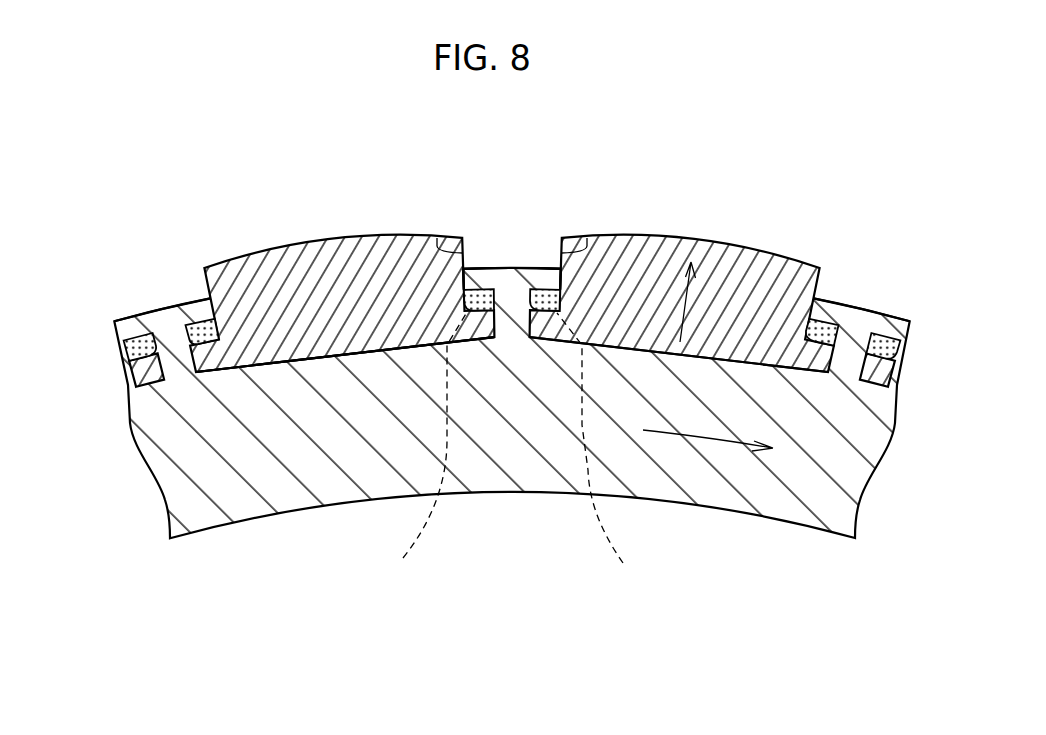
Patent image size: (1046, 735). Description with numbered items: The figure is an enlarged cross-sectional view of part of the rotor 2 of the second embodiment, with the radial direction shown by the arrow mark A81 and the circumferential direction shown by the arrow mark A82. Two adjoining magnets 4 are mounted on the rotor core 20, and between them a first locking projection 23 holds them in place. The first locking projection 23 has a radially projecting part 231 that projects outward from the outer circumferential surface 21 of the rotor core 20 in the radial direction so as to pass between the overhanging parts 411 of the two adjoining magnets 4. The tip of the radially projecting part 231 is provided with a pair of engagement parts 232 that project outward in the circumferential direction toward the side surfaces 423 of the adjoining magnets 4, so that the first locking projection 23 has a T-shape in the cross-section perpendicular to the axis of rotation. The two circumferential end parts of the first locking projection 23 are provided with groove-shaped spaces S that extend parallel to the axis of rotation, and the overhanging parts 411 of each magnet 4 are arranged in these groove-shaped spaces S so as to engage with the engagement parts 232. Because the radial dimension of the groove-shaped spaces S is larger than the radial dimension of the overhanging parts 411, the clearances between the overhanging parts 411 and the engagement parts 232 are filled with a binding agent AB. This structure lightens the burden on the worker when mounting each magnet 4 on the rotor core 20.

The rotor 2 is at (114, 142).
The magnet 4 is at (306, 231).
The rotor core 20 is at (802, 478).
The outer circumferential surface 21 is at (354, 356).
The first locking projection 23 is at (157, 302).
The radially projecting part 231 is at (511, 323).
The engagement part 232 is at (478, 265).
The overhanging part 411 is at (489, 340).
The side surface 423 is at (437, 238).
The groove-shaped space S is at (514, 452).
The binding agent AB is at (464, 291).
The arrow mark A81 is at (687, 308).
The arrow mark A82 is at (718, 440).